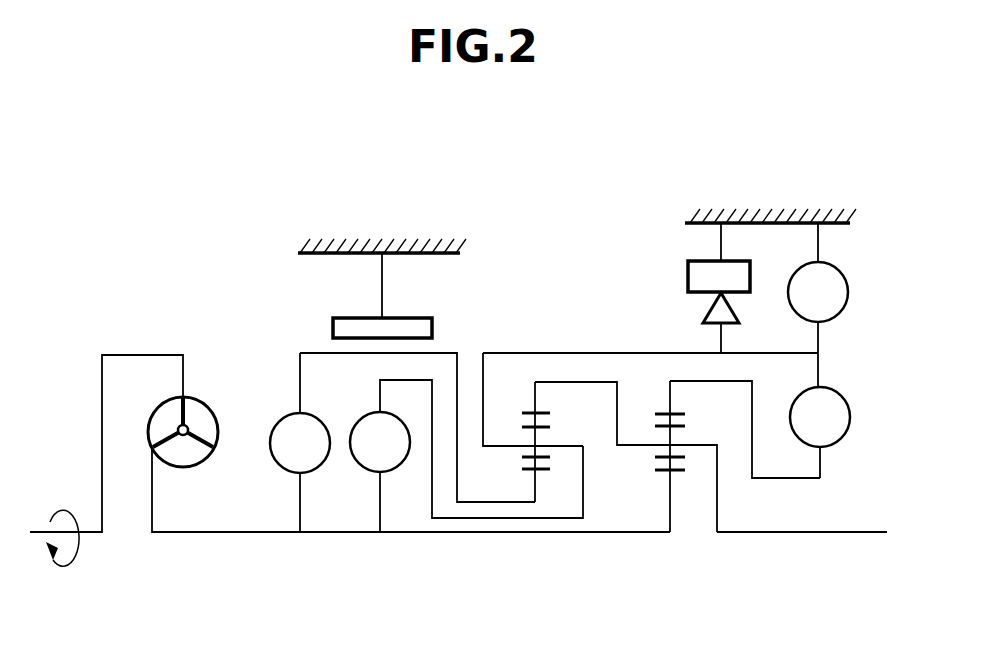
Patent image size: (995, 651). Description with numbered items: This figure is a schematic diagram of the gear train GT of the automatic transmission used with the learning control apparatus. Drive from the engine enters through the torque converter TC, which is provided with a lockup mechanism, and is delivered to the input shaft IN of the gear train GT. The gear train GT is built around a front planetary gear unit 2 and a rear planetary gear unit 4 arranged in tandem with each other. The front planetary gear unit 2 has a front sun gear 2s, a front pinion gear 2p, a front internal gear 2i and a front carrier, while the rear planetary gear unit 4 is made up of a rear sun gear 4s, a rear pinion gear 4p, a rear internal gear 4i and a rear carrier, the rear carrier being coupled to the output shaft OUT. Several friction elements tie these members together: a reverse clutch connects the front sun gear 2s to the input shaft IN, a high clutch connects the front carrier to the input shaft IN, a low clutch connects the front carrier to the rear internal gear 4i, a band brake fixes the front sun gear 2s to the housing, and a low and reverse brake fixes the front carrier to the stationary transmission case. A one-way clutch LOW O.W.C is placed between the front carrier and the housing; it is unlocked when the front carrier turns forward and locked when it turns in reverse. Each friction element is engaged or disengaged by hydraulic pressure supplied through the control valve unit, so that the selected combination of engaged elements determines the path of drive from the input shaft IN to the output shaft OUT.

The input shaft IN is at (248, 535).
The torque converter TC is at (203, 394).
The gear train GT is at (560, 229).
The front planetary gear unit 2 is at (623, 486).
The front internal gear 2i is at (527, 411).
The front pinion gear 2p is at (538, 438).
The front sun gear 2s is at (514, 471).
The rear planetary gear unit 4 is at (677, 489).
The rear internal gear 4i is at (661, 412).
The rear pinion gear 4p is at (676, 437).
The rear sun gear 4s is at (648, 471).
The output shaft OUT is at (810, 533).
The one-way clutch LOW O.W.C is at (688, 278).